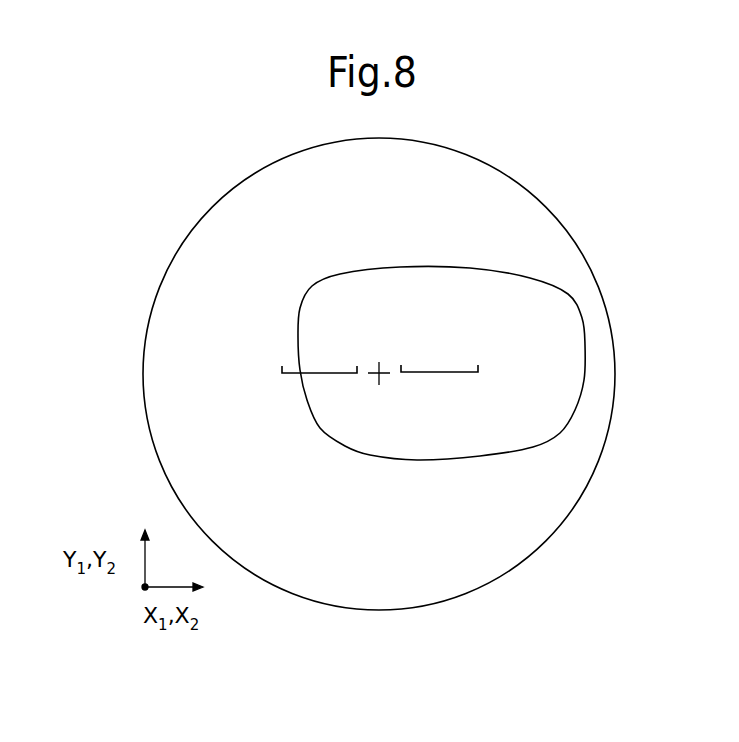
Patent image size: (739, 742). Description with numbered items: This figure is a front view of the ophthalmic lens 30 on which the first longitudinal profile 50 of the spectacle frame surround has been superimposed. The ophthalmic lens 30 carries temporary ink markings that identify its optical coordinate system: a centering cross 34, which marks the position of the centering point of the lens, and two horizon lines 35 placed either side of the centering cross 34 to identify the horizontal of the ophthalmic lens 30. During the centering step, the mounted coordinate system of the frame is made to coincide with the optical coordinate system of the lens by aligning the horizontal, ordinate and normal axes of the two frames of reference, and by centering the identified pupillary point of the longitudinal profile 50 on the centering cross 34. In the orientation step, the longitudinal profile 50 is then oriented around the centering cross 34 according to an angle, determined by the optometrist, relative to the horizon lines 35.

The ophthalmic lens 30 is at (532, 192).
The first longitudinal profile 50 is at (438, 268).
The centering cross 34 is at (380, 370).
The horizon lines 35 is at (323, 373).